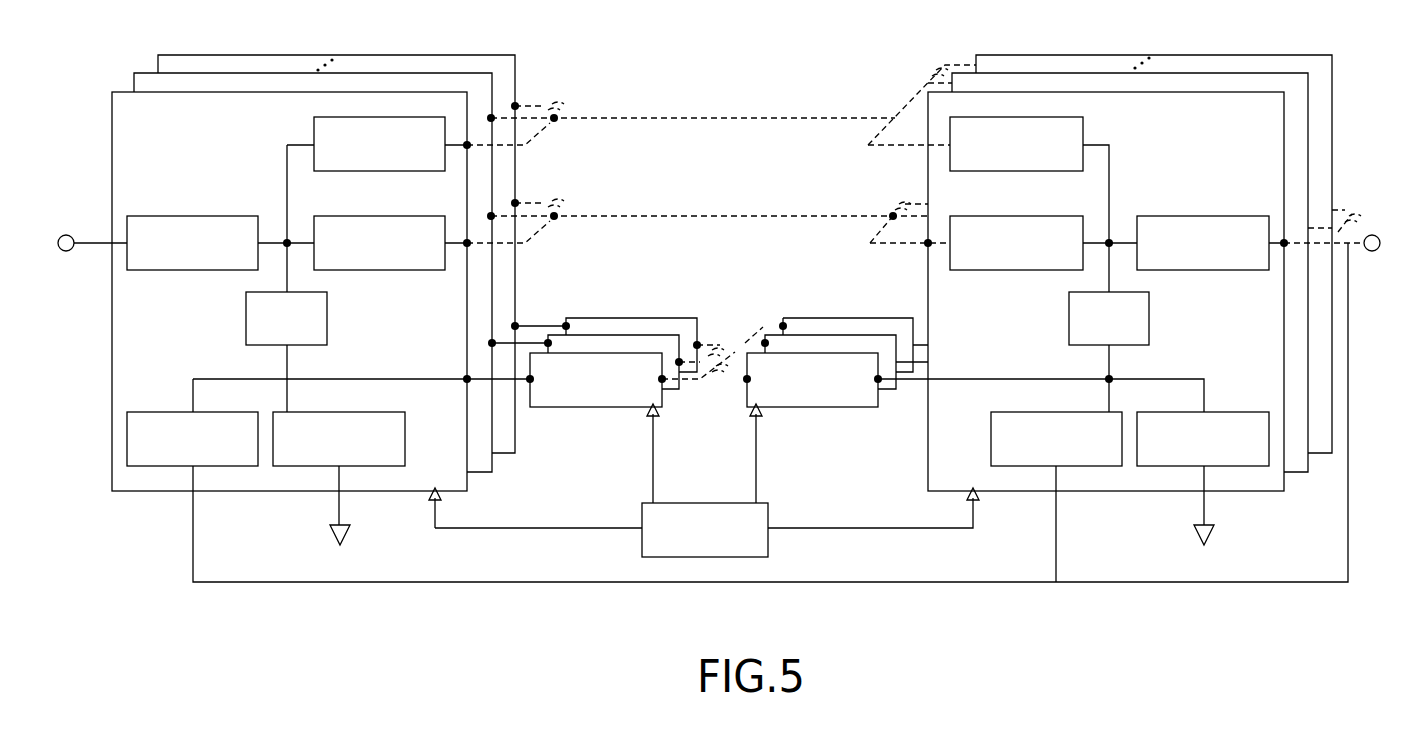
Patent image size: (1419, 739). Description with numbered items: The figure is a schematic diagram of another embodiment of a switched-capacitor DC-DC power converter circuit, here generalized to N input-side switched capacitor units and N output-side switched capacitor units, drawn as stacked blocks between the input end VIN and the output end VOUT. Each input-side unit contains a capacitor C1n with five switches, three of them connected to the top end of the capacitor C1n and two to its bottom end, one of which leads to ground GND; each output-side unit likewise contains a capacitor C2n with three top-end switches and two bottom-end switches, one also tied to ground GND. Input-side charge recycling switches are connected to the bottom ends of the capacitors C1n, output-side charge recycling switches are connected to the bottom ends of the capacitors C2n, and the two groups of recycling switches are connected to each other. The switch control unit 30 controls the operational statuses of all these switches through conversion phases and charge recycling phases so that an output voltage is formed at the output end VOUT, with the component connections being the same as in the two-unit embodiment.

The switch control unit 30 is at (718, 543).
The capacitor of input-side switched capacitor unit C1n is at (286, 318).
The capacitor of output-side switched capacitor unit C2n is at (1109, 318).
The input end VIN is at (87, 258).
The output end VOUT is at (1385, 258).
The ground GND is at (799, 509).